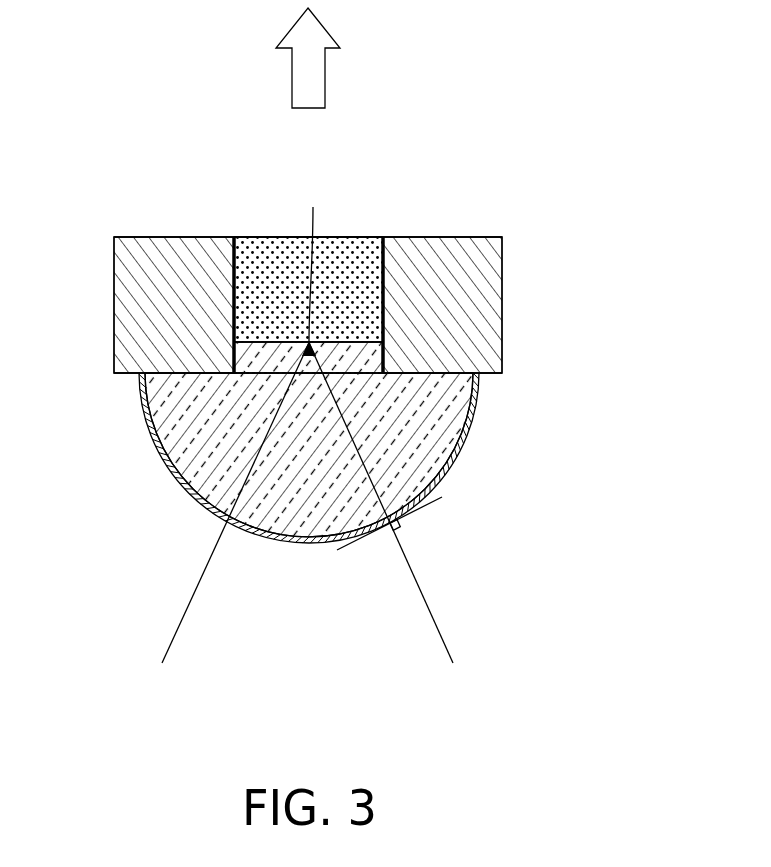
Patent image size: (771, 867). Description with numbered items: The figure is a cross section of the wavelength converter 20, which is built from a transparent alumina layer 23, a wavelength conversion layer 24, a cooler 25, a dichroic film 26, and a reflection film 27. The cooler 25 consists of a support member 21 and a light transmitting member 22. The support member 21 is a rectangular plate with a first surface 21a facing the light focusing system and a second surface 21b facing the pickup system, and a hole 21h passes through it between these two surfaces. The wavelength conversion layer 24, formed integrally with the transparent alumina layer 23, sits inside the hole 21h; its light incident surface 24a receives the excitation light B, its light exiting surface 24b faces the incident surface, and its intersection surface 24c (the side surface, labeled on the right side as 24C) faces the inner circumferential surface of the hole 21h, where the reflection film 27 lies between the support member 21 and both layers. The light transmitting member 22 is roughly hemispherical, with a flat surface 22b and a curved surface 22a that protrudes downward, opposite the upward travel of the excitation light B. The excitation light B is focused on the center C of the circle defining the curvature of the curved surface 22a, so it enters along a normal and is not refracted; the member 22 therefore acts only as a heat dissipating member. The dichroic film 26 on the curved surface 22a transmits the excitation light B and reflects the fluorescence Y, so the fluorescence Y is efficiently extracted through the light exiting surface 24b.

The wavelength converter 20 is at (452, 141).
The support member 21 is at (168, 250).
The first surface 21a is at (452, 378).
The second surface 21b is at (466, 238).
The hole 21h is at (243, 318).
The light transmitting member 22 is at (430, 463).
The curved surface 22a is at (306, 545).
The flat surface 22b is at (433, 371).
The transparent alumina layer 23 is at (285, 357).
The wavelength conversion layer 24 is at (255, 250).
The light incident surface 24a is at (355, 345).
The light exiting surface 24b is at (345, 240).
The intersection surface 24c is at (234, 277).
The side surface of wavelength conversion member 24C is at (386, 268).
The cooler 25 is at (527, 260).
The dichroic film 26 is at (163, 467).
The reflection film 27 is at (384, 240).
The excitation light B is at (440, 627).
The center C is at (312, 265).
The fluorescence Y is at (298, 37).